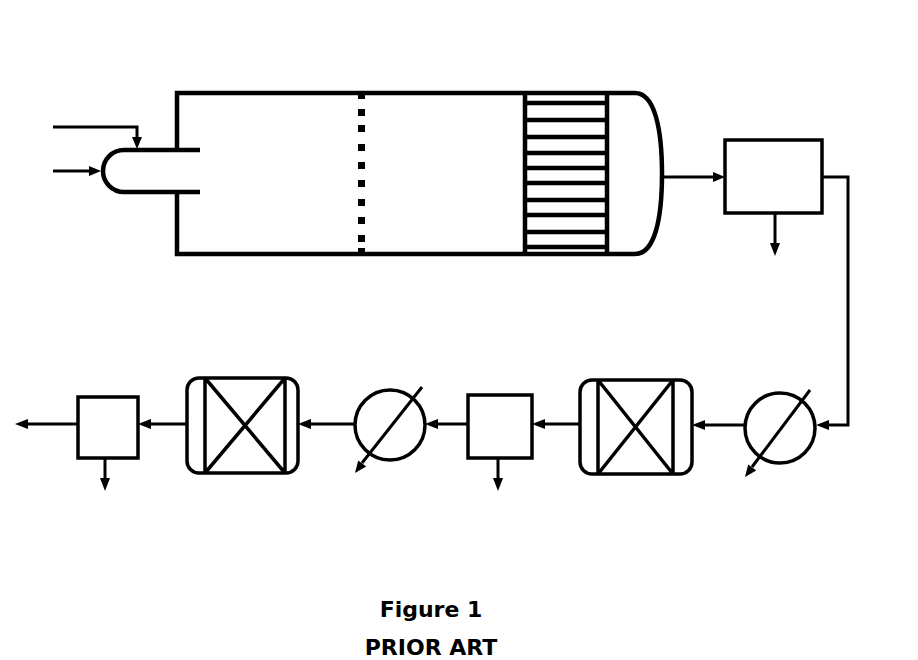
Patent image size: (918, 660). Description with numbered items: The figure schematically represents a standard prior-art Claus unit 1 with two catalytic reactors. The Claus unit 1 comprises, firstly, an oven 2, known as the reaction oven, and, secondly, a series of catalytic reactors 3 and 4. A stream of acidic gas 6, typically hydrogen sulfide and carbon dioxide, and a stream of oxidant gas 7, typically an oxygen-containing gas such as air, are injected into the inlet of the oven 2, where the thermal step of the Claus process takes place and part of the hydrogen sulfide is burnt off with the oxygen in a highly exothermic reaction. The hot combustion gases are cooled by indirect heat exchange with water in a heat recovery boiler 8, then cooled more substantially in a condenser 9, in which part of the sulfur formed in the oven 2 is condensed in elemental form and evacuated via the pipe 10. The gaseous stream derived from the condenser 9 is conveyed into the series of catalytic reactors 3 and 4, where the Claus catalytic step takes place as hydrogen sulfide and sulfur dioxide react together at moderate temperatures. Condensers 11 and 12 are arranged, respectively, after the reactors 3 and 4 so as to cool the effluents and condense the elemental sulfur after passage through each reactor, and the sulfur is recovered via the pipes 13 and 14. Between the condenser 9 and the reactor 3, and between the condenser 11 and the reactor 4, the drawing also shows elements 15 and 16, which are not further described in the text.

The Claus unit 1 is at (168, 46).
The oven 2 is at (283, 130).
The catalytic reactor 3 is at (635, 380).
The catalytic reactor 4 is at (242, 378).
The stream of acidic gas 6 is at (77, 181).
The stream of oxidant gas 7 is at (97, 127).
The heat recovery boiler 8 is at (573, 125).
The condenser 9 is at (770, 140).
The pipe 10 is at (775, 246).
The condenser 11 is at (498, 395).
The condenser 12 is at (107, 397).
The pipe 13 is at (498, 488).
The pipe 14 is at (105, 489).
The first expander / valve 15 is at (777, 393).
The second expander / valve 16 is at (388, 390).